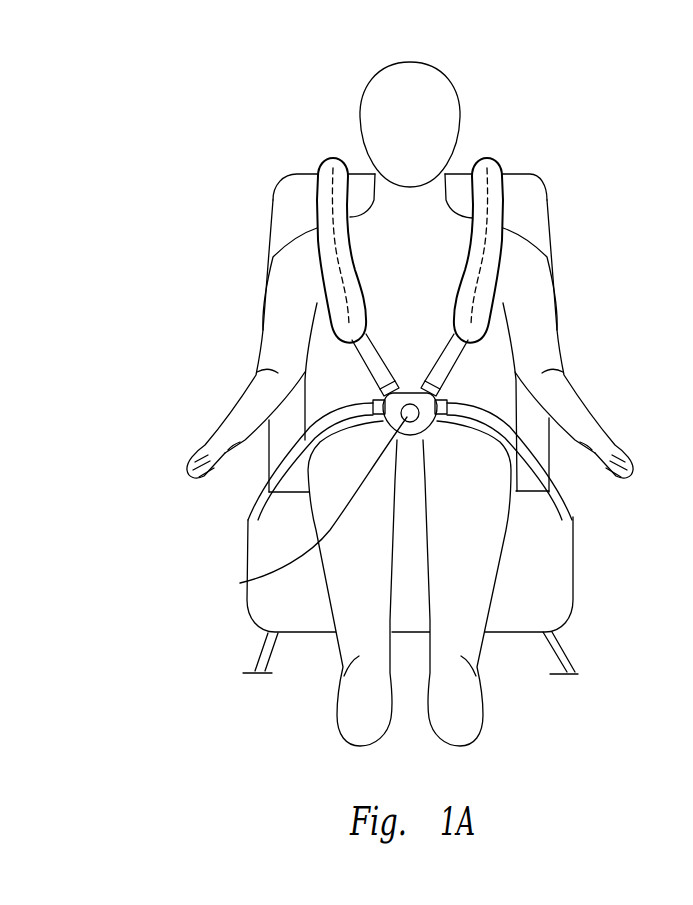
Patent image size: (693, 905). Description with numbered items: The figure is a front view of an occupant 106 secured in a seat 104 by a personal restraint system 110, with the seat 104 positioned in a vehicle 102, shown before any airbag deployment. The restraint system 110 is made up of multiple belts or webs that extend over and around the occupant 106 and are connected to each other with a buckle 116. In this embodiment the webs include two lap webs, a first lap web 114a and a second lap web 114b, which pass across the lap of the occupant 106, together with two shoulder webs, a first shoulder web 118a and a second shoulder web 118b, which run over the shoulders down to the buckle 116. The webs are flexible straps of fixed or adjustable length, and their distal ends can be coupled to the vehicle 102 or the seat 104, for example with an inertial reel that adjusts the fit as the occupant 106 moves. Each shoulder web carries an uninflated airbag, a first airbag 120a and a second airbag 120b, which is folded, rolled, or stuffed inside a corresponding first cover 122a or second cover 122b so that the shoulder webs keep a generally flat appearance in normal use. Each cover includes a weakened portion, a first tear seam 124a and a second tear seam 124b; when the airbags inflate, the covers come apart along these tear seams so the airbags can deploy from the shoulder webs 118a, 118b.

The vehicle 102 is at (601, 723).
The seat 104 is at (560, 603).
The occupant 106 is at (488, 553).
The personal restraint system 110 is at (213, 220).
The first lap web 114a is at (527, 433).
The second lap web 114b is at (262, 483).
The buckle 116 is at (240, 583).
The first shoulder web 118a is at (478, 362).
The second shoulder web 118b is at (345, 360).
The first airbag 120a is at (519, 216).
The second airbag 120b is at (318, 144).
The first cover 122a is at (490, 317).
The second cover 122b is at (335, 311).
The first tear seam 124a is at (487, 255).
The second tear seam 124b is at (333, 252).